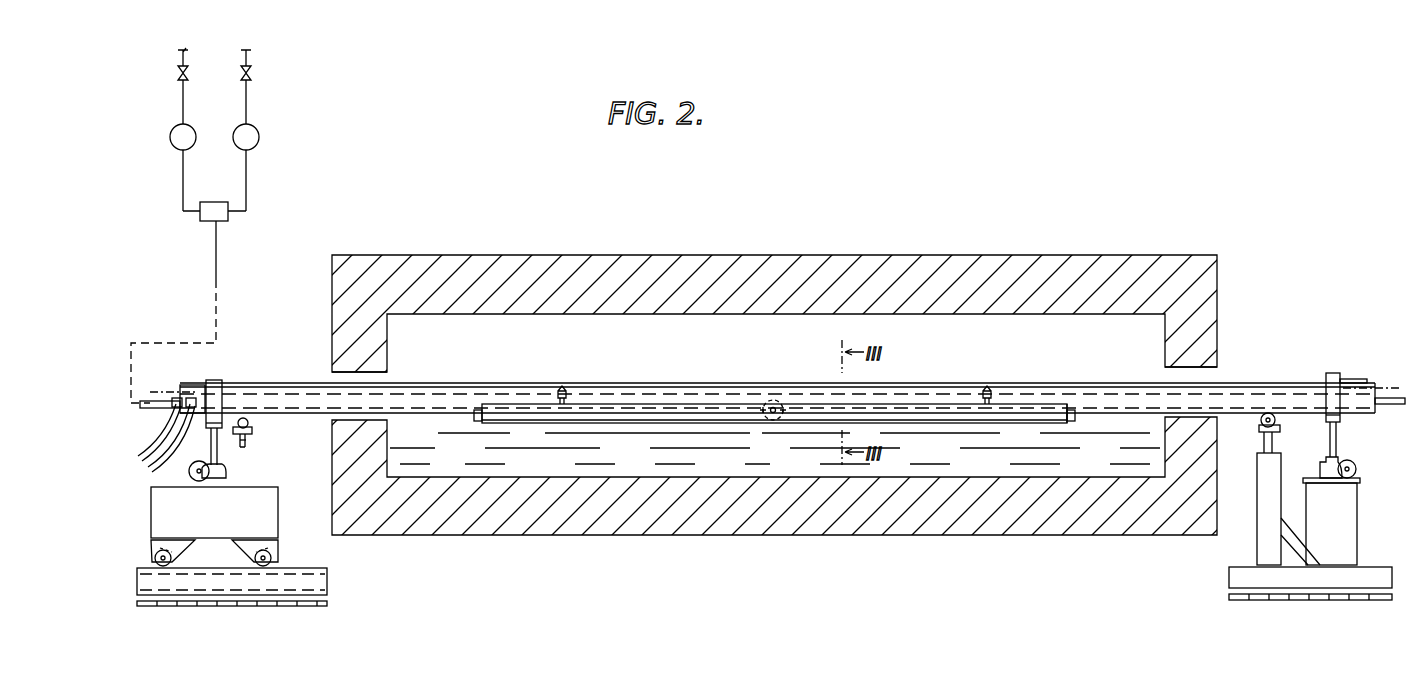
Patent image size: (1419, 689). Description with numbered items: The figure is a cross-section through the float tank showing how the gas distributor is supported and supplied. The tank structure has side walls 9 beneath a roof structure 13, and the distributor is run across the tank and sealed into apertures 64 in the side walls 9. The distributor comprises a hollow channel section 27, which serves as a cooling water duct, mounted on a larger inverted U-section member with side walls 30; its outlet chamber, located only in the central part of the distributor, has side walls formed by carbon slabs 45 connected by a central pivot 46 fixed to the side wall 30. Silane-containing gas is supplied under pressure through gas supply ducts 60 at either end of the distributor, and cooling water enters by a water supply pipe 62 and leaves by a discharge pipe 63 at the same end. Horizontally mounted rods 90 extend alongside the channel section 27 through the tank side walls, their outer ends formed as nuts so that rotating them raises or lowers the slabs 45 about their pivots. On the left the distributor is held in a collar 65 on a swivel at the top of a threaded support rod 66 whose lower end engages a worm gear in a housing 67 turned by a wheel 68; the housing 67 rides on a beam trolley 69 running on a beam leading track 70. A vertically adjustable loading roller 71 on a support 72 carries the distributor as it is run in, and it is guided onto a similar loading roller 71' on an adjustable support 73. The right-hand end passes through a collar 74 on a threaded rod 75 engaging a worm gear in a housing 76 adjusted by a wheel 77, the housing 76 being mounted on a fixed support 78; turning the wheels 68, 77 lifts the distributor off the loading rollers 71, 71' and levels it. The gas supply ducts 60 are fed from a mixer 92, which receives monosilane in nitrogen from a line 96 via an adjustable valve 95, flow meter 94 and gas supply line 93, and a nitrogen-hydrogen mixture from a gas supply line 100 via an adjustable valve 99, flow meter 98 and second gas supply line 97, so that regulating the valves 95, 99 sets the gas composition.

The side walls 9 is at (372, 432).
The roof structure 13 is at (848, 262).
The hollow channel section 27 is at (943, 384).
The side walls 30 is at (1073, 398).
The carbon slabs 45 is at (597, 410).
The central pivot 46 is at (773, 404).
The gas supply ducts 60 is at (218, 262).
The water supply pipe 62 is at (176, 398).
The discharge pipe 63 is at (190, 398).
The apertures 64 is at (372, 378).
The collar 65 is at (215, 380).
The threaded support rod 66 is at (217, 455).
The housing 67 is at (226, 478).
The wheel 68 is at (192, 472).
The beam trolley 69 is at (265, 526).
The beam leading track 70 is at (320, 580).
The loading roller 71 is at (248, 398).
The loading roller 71' is at (1265, 399).
The support 72 is at (252, 442).
The adjustable support 73 is at (1256, 553).
The collar 74 is at (1333, 372).
The threaded rod 75 is at (1330, 442).
The housing 76 is at (1340, 462).
The wheel 77 is at (1356, 466).
The fixed support 78 is at (1350, 513).
The rod 90 is at (497, 386).
The mixer 92 is at (207, 216).
The gas supply line 93 is at (246, 166).
The flow meter 94 is at (255, 128).
The adjustable valve 95 is at (254, 72).
The line 96 is at (252, 53).
The second gas supply line 97 is at (183, 179).
The flow meter 98 is at (173, 127).
The adjustable valve 99 is at (178, 78).
The gas supply line 100 is at (178, 50).